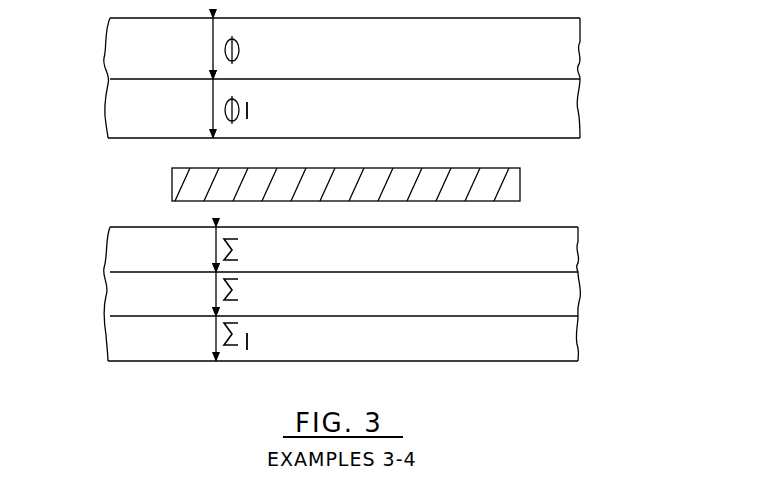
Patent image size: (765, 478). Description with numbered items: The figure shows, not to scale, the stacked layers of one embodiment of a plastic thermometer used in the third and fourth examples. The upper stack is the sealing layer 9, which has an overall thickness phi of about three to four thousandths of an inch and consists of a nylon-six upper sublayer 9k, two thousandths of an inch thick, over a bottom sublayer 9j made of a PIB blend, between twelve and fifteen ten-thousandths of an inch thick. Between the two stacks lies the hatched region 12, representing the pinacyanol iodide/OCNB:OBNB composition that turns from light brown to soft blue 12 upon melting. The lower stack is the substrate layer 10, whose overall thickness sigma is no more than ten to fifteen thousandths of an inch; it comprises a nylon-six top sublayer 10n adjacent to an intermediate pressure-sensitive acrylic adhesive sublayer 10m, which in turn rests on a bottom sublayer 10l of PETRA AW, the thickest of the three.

The sealing layer 9 is at (339, 78).
The upper sublayer 9k is at (558, 67).
The bottom sublayer 9j is at (560, 128).
The soft blue 12 is at (507, 190).
The substrate layer 10 is at (346, 294).
The top sublayer 10n is at (562, 261).
The intermediate pressure-sensitive acrylic adhesive sublayer 10m is at (562, 306).
The bottom sublayer 10l is at (560, 350).